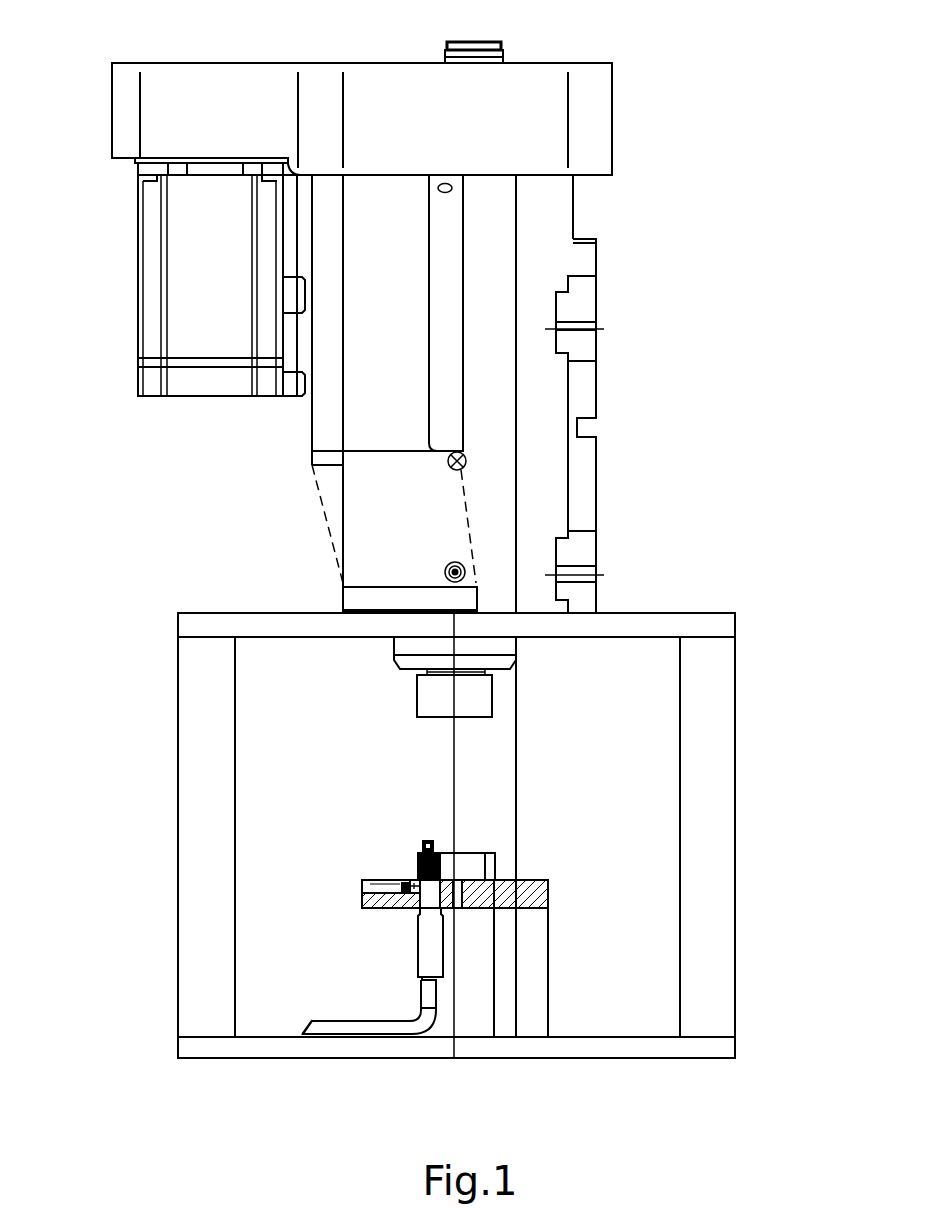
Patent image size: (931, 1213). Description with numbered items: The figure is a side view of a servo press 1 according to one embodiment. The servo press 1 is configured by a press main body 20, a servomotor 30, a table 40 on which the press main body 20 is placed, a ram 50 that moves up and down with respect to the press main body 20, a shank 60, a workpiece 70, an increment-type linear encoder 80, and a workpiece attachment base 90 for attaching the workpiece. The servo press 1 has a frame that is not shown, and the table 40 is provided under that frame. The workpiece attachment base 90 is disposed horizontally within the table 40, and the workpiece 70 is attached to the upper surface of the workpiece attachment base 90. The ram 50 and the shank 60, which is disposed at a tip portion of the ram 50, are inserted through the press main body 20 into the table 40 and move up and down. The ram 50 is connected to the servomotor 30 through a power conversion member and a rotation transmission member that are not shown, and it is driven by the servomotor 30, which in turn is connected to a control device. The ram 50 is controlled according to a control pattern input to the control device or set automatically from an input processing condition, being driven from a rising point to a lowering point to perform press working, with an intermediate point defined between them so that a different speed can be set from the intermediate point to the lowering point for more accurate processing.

The servo press 1 is at (728, 97).
The press main body 20 is at (596, 318).
The servomotor 30 is at (138, 283).
The table 40 is at (178, 613).
The ram 50 is at (398, 660).
The shank 60 is at (492, 717).
The workpiece 70 is at (495, 853).
The increment-type linear encoder 80 is at (418, 853).
The workpiece attachment base 90 is at (548, 957).